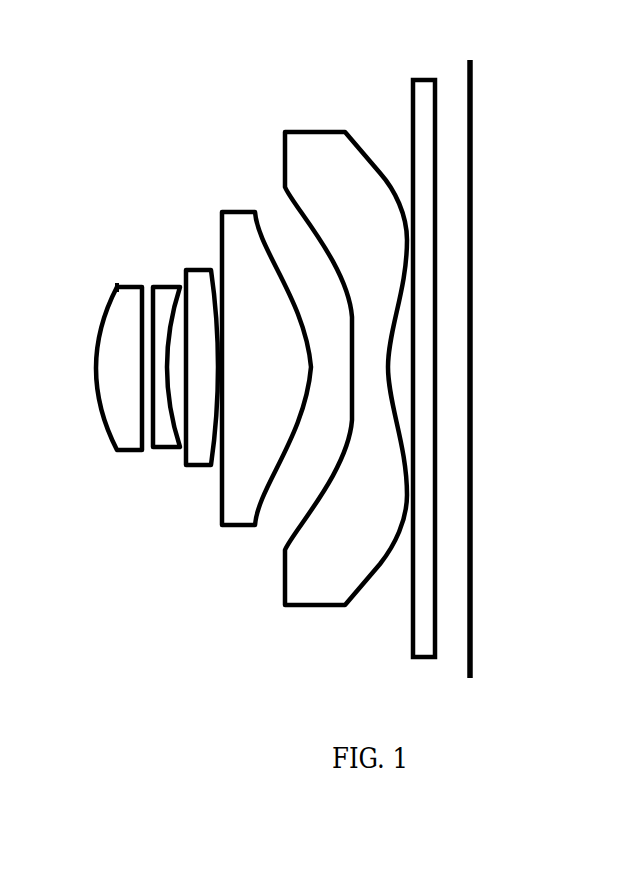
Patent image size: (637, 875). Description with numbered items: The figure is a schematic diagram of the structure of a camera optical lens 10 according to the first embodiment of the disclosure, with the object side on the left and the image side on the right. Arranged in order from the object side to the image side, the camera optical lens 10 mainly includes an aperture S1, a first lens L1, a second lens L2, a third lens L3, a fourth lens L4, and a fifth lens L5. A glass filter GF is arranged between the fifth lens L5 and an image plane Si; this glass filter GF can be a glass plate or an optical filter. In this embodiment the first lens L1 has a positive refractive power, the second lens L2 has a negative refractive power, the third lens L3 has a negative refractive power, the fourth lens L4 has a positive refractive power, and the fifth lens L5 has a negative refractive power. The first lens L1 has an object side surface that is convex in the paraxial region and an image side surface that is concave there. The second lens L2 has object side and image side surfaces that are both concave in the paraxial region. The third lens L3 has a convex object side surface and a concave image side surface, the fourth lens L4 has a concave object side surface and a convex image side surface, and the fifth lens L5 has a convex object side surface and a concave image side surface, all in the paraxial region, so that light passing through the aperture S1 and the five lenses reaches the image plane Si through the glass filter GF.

The camera optical lens 10 is at (305, 32).
The aperture S1 is at (110, 269).
The first lens L1 is at (119, 356).
The second lens L2 is at (165, 355).
The third lens L3 is at (201, 354).
The fourth lens L4 is at (266, 354).
The fifth lens L5 is at (346, 352).
The glass filter GF is at (422, 353).
The image plane Si is at (470, 353).